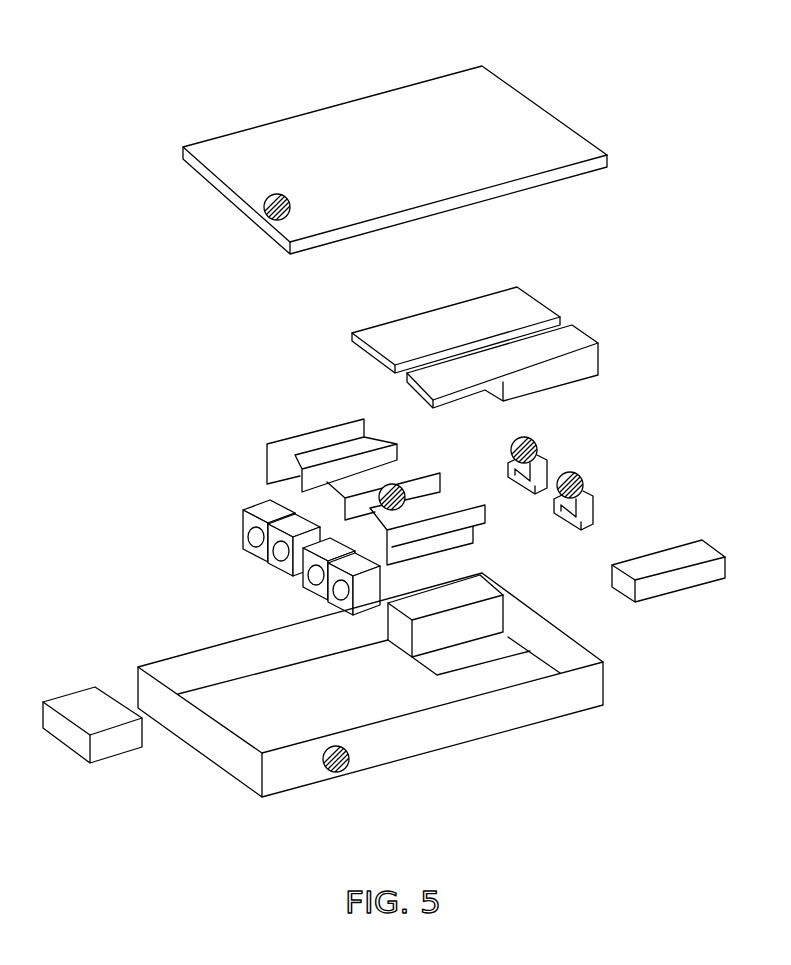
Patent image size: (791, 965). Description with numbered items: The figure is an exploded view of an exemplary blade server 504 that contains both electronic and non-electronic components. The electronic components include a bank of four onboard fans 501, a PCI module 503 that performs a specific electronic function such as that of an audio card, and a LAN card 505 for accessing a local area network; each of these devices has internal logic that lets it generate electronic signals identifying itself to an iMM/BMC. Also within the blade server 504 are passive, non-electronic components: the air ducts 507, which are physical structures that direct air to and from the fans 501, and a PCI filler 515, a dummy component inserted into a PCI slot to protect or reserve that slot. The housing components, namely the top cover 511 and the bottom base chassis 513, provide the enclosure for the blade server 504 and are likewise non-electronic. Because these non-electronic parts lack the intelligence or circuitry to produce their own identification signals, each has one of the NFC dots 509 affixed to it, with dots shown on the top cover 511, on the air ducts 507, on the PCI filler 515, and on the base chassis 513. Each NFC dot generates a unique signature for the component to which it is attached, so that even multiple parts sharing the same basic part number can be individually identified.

The blade server 504 is at (116, 86).
The top cover 511 is at (547, 112).
The PCI module 503 is at (587, 334).
The air ducts 507 is at (253, 436).
The fans 501 is at (226, 520).
The base chassis 513 is at (550, 720).
The LAN card 505 is at (507, 648).
The PCI filler 515 is at (593, 490).
The NFC dots 509 is at (264, 213).